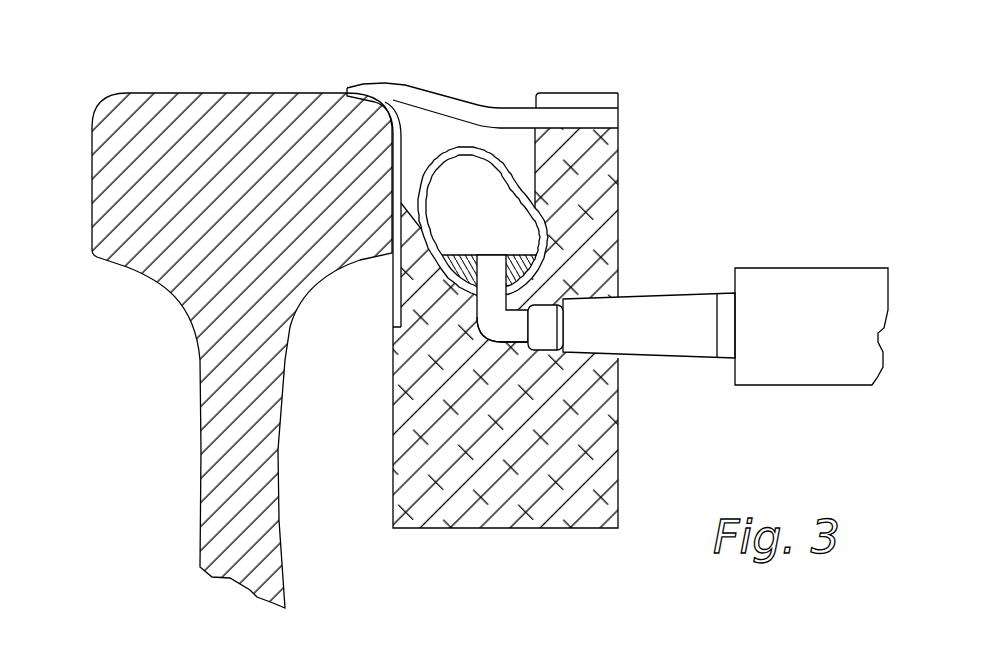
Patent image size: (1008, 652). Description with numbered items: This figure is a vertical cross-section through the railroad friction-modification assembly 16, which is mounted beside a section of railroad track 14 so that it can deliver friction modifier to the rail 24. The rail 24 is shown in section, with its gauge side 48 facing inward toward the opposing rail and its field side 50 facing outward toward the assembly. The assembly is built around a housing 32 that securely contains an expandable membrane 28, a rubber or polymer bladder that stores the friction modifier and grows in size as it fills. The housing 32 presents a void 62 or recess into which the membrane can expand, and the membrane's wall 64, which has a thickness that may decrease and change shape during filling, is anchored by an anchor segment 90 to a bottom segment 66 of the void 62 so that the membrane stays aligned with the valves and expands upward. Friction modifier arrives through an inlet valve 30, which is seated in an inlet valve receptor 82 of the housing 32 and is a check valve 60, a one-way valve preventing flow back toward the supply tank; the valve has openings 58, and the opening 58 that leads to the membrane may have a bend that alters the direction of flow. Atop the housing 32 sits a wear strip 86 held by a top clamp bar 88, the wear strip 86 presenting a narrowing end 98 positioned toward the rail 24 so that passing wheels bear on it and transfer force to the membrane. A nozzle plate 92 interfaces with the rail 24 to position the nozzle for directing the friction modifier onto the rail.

The section of railroad track 14 is at (100, 40).
The railroad friction-modification assembly 16 is at (770, 93).
The rail 24 is at (207, 100).
The expandable membrane 28 is at (517, 180).
The inlet valve 30 is at (835, 278).
The housing 32 is at (660, 452).
The gauge side 48 is at (56, 250).
The field side 50 is at (363, 314).
The opening 58 is at (495, 324).
The check valve 60 is at (830, 418).
The void 62 is at (540, 149).
The wall 64 is at (545, 233).
The bottom segment 66 is at (546, 248).
The inlet valve receptor 82 is at (667, 347).
The wear strip 86 is at (481, 106).
The top clamp bar 88 is at (587, 97).
The anchor segment 90 is at (535, 290).
The nozzle plate 92 is at (382, 92).
The narrowing end 98 is at (402, 89).